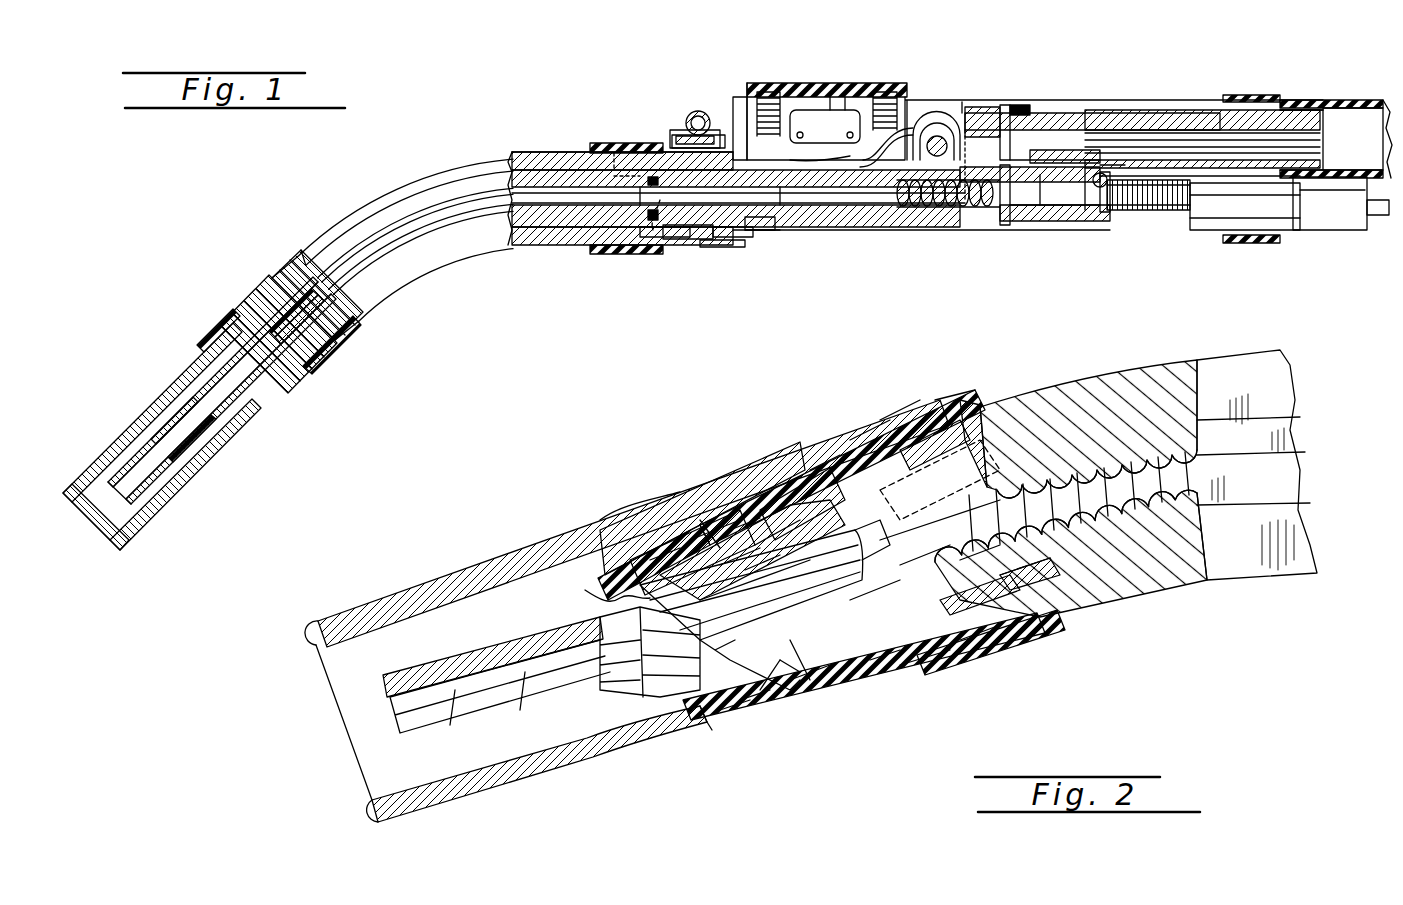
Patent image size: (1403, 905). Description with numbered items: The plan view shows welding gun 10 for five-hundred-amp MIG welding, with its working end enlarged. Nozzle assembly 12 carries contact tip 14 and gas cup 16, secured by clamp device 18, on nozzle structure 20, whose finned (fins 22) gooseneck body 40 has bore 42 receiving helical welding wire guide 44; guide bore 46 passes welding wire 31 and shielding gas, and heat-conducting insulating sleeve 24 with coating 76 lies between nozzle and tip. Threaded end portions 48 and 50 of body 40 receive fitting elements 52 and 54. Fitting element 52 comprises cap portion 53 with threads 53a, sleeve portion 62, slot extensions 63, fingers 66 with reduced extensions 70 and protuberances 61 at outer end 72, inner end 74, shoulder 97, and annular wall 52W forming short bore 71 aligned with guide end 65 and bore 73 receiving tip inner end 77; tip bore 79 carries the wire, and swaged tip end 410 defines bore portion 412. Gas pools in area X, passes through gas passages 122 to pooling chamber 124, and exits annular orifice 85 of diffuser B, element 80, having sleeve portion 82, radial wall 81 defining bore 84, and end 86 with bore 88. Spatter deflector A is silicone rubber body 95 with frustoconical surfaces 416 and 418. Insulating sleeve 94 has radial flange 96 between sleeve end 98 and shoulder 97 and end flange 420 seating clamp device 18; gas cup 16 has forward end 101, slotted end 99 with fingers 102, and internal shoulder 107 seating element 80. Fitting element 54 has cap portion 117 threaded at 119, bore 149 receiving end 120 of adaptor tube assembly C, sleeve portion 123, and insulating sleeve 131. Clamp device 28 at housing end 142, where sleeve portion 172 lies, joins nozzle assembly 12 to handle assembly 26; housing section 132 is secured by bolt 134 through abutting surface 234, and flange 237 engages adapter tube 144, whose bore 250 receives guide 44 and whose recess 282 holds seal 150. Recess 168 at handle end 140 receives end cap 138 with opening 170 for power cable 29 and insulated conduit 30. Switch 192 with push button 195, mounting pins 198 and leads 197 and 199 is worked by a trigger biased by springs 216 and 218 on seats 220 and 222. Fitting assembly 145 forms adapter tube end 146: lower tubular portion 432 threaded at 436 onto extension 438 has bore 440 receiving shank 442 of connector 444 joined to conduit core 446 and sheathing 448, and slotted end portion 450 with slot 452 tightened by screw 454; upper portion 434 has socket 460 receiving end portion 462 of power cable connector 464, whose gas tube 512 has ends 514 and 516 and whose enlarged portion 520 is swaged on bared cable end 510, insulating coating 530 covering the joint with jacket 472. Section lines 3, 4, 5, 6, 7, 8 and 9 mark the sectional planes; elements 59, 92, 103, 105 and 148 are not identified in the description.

In FIG. 1, the welding gun 10 is at (1253, 67).
In FIG. 1, the nozzle assembly 12 is at (525, 141).
In FIG. 1, the contact tip 14 is at (100, 528).
In FIG. 2, the contact tip 14 is at (373, 670).
In FIG. 1, the gas cup 16 is at (163, 523).
In FIG. 2, the gas cup 16 is at (402, 588).
In FIG. 2, the clamp device 18 is at (810, 438).
In FIG. 1, the nozzle structure 20 is at (454, 151).
In FIG. 2, the nozzle structure 20 is at (1259, 343).
In FIG. 2, the fins 22 is at (1280, 460).
In FIG. 1, the electrically insulating sleeve 24 is at (262, 406).
In FIG. 2, the electrically insulating sleeve 24 is at (838, 700).
In FIG. 1, the handle assembly 26 is at (1147, 83).
In FIG. 1, the clamp device 28 is at (707, 103).
In FIG. 1, the power cable 29 is at (1359, 107).
In FIG. 1, the insulated conduit 30 is at (1309, 239).
In FIG. 1, the welding wire 31 is at (1375, 215).
In FIG. 1, the gooseneck shaped body 40 is at (478, 255).
In FIG. 1, the bore 42 is at (318, 282).
In FIG. 2, the bore 42 is at (1105, 510).
In FIG. 2, the welding wire guide 44 is at (1150, 500).
In FIG. 2, the bore 46 is at (1145, 475).
In FIG. 1, the threaded end portion 48 is at (255, 295).
In FIG. 2, the threaded end portion 48 is at (938, 490).
In FIG. 1, the threaded end portion 50 is at (612, 150).
In FIG. 1, the fitting element 52 is at (232, 312).
In FIG. 2, the fitting element 52 is at (1012, 645).
In FIG. 2, the annular wall 52W is at (930, 540).
In FIG. 1, the cap portion 53 is at (338, 338).
In FIG. 2, the cap portion 53 is at (1035, 585).
In FIG. 2, the internal threading 53a is at (1015, 572).
In FIG. 1, the fitting element 54 is at (640, 240).
In FIG. 2, the spacer 59 is at (975, 630).
In FIG. 2, the protuberances 61 is at (718, 540).
In FIG. 2, the sleeve portion 62 is at (888, 670).
In FIG. 1, the slot extension 63 is at (315, 312).
In FIG. 2, the slot extension 63 is at (895, 430).
In FIG. 2, the end of guide 65 is at (975, 560).
In FIG. 2, the fingers 66 is at (768, 545).
In FIG. 2, the extension 70 is at (740, 530).
In FIG. 2, the short bore 71 is at (795, 560).
In FIG. 2, the outwardly extending end 72 is at (722, 530).
In FIG. 2, the bore 73 is at (735, 590).
In FIG. 2, the inwardly extending end 74 is at (985, 398).
In FIG. 2, the electrically insulating coating 76 is at (922, 675).
In FIG. 2, the inner end of contact tip 77 is at (874, 599).
In FIG. 2, the bore 79 is at (585, 610).
In FIG. 2, the diffuser element 80 is at (706, 734).
In FIG. 2, the radial wall 81 is at (720, 720).
In FIG. 2, the double ended sleeve portion 82 is at (668, 545).
In FIG. 2, the bore 84 is at (748, 580).
In FIG. 2, the annular gas flow orifice 85 is at (650, 652).
In FIG. 2, the end of diffuser element 86 is at (748, 520).
In FIG. 2, the bore 88 is at (775, 700).
In FIG. 2, the washer 92 is at (812, 690).
In FIG. 2, the electrically insulating sleeve member 94 is at (960, 395).
In FIG. 2, the annular disc or body 95 is at (652, 690).
In FIG. 2, the radial flange portion 96 is at (940, 430).
In FIG. 2, the shoulder 97 is at (975, 655).
In FIG. 2, the end of insulating sleeve 98 is at (905, 415).
In FIG. 2, the end of gas cup 99 is at (828, 468).
In FIG. 2, the forward end of gas cup 101 is at (432, 805).
In FIG. 2, the fingers 102 is at (800, 525).
In FIG. 2, the block 103 is at (835, 550).
In FIG. 2, the housing 105 is at (795, 495).
In FIG. 2, the internal shoulder 107 is at (680, 508).
In FIG. 1, the cap portion 117 is at (600, 148).
In FIG. 1, the internal threading 119 is at (600, 248).
In FIG. 1, the end of adaptor tube assembly 120 is at (685, 240).
In FIG. 2, the gas passages 122 is at (780, 540).
In FIG. 1, the sleeve portion 123 is at (740, 160).
In FIG. 2, the pooling chamber 124 is at (740, 662).
In FIG. 1, the insulating sleeve 131 is at (605, 250).
In FIG. 1, the housing section 132 is at (838, 228).
In FIG. 1, the bolt 134 is at (936, 136).
In FIG. 1, the end cap 138 is at (1290, 100).
In FIG. 1, the handle assembly end 140 is at (1230, 95).
In FIG. 1, the housing end 142 is at (750, 235).
In FIG. 1, the adapter tube 144 is at (897, 210).
In FIG. 1, the fitting assembly 145 is at (1112, 200).
In FIG. 1, the end of adapter tube 146 is at (1045, 210).
In FIG. 1, the mount 148 is at (680, 165).
In FIG. 1, the bore 149 is at (725, 238).
In FIG. 1, the seal 150 is at (653, 220).
In FIG. 1, the recess 168 is at (1275, 110).
In FIG. 1, the opening 170 is at (1260, 243).
In FIG. 1, the sleeve portion 172 is at (708, 250).
In FIG. 1, the off-on switch 192 is at (856, 100).
In FIG. 1, the push button 195 is at (836, 96).
In FIG. 1, the lead 197 is at (764, 231).
In FIG. 1, the mounting pins 198 is at (825, 126).
In FIG. 1, the lead 199 is at (880, 190).
In FIG. 1, the compression spring 216 is at (772, 88).
In FIG. 1, the compression spring 218 is at (870, 150).
In FIG. 1, the spring seat 220 is at (820, 156).
In FIG. 1, the spring seat 222 is at (790, 215).
In FIG. 1, the abutting surface 234 is at (945, 125).
In FIG. 1, the flange 237 is at (975, 230).
In FIG. 1, the bore 250 is at (945, 208).
In FIG. 1, the recess 282 is at (663, 240).
In FIG. 1, the lower tubular portion 432 is at (1040, 232).
In FIG. 1, the upper tubular portion 434 is at (1028, 112).
In FIG. 1, the internal threading 436 is at (1000, 225).
In FIG. 1, the threaded extension 438 is at (1030, 208).
In FIG. 1, the bore 440 is at (1072, 185).
In FIG. 1, the shank 442 is at (1115, 205).
In FIG. 1, the tubular connector 444 is at (1065, 156).
In FIG. 1, the helical wire core 446 is at (1175, 212).
In FIG. 1, the insulating sheathing 448 is at (1238, 233).
In FIG. 1, the end portion 450 is at (1095, 166).
In FIG. 1, the slot 452 is at (1100, 128).
In FIG. 1, the screw 454 is at (1090, 212).
In FIG. 1, the threaded socket 460 is at (1012, 120).
In FIG. 1, the end portion 462 is at (985, 108).
In FIG. 1, the power cable connector 464 is at (1150, 135).
In FIG. 1, the insulating jacket 472 is at (1336, 192).
In FIG. 1, the end of power cable 510 is at (1300, 110).
In FIG. 1, the gas tube 512 is at (1188, 130).
In FIG. 1, the end of gas tube 514 is at (1330, 203).
In FIG. 1, the end of gas tube 516 is at (1030, 112).
In FIG. 1, the enlarged portion 520 is at (1228, 215).
In FIG. 1, the insulating coating 530 is at (1335, 100).
In FIG. 2, the end of tip 410 is at (430, 672).
In FIG. 2, the bore portion 412 is at (448, 700).
In FIG. 2, the forwardly facing frustoconical deflector surface 416 is at (608, 583).
In FIG. 2, the rearwardly facing frustoconical surface 418 is at (650, 520).
In FIG. 2, the end flange 420 is at (858, 440).
In FIG. 1, the weld spatter deflector A is at (146, 411).
In FIG. 2, the weld spatter deflector A is at (573, 593).
In FIG. 1, the diffuser B is at (178, 373).
In FIG. 2, the diffuser B is at (697, 532).
In FIG. 1, the adaptor tube assembly C is at (884, 232).
In FIG. 2, the gas pooling area X is at (922, 553).
In FIG. 1, the section line 3 is at (200, 303).
In FIG. 1, the section line 4 is at (402, 148).
In FIG. 1, the section line 5 is at (670, 110).
In FIG. 1, the section line 6 is at (768, 75).
In FIG. 1, the section line 7 is at (812, 75).
In FIG. 1, the section line 8 is at (946, 70).
In FIG. 1, the section line 9 is at (1006, 70).